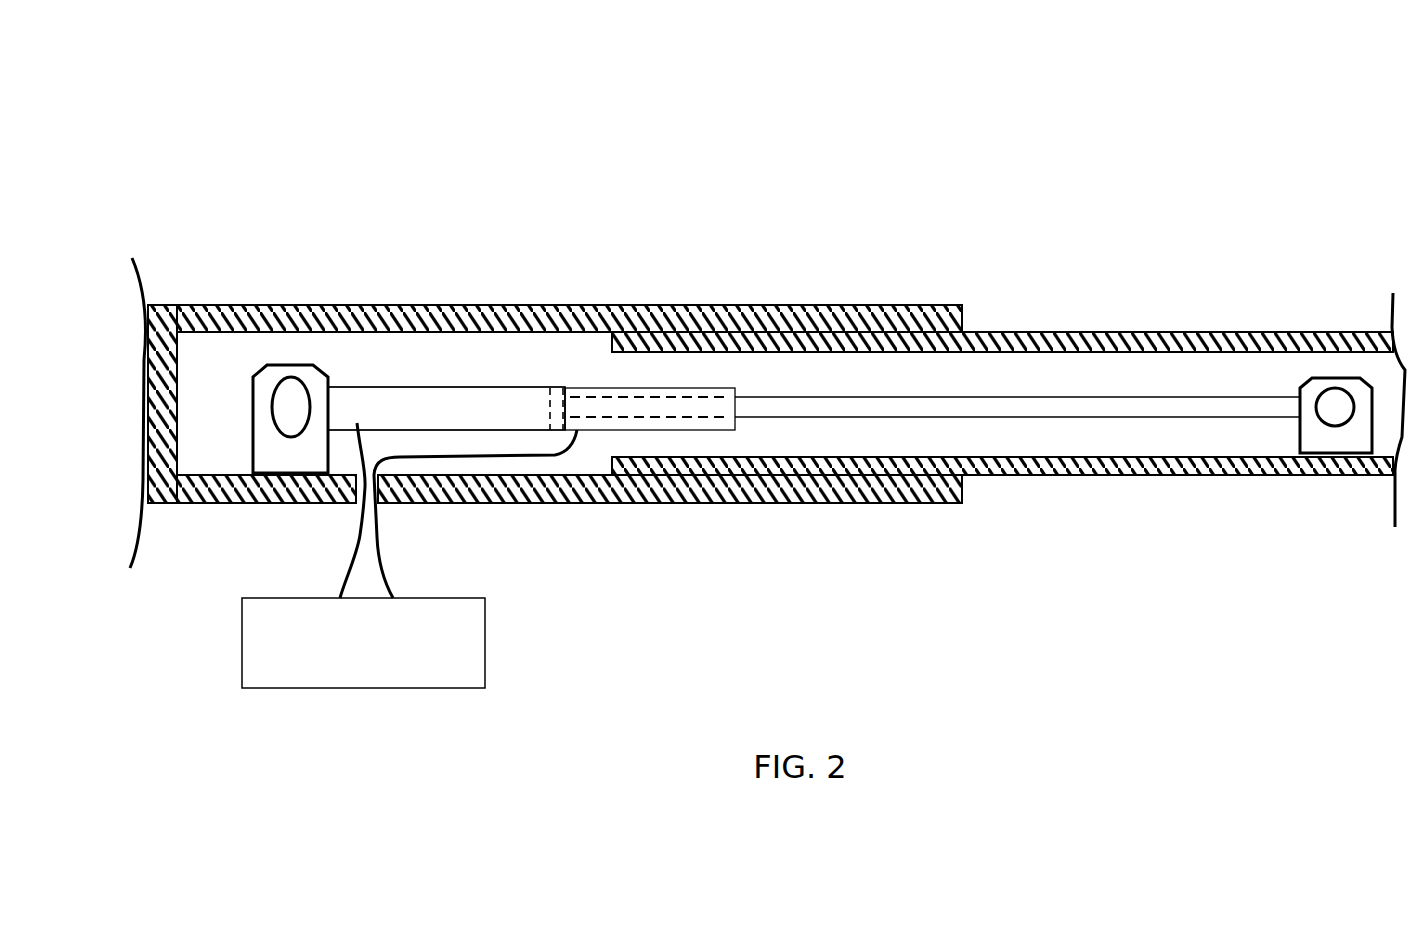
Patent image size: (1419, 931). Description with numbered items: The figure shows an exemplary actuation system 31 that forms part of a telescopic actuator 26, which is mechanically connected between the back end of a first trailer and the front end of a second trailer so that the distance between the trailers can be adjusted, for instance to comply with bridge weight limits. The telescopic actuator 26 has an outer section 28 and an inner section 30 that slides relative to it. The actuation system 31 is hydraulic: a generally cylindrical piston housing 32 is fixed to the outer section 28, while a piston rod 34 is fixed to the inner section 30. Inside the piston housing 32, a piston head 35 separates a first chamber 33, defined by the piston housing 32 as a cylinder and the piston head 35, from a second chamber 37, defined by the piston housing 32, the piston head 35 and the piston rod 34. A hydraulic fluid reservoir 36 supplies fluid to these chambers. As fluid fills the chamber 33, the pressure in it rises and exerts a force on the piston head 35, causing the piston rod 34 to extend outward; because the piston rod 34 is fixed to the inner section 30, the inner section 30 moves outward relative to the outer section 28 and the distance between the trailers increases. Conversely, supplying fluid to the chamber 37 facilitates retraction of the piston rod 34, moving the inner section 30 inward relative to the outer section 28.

The telescopic actuator 26 is at (289, 80).
The outer section 28 is at (525, 305).
The inner section 30 is at (1160, 332).
The actuation system 31 is at (340, 372).
The piston housing 32 is at (463, 388).
The chamber 33 is at (418, 421).
The piston rod 34 is at (1043, 408).
The piston head 35 is at (559, 417).
The hydraulic fluid reservoir 36 is at (482, 657).
The chamber 37 is at (645, 392).